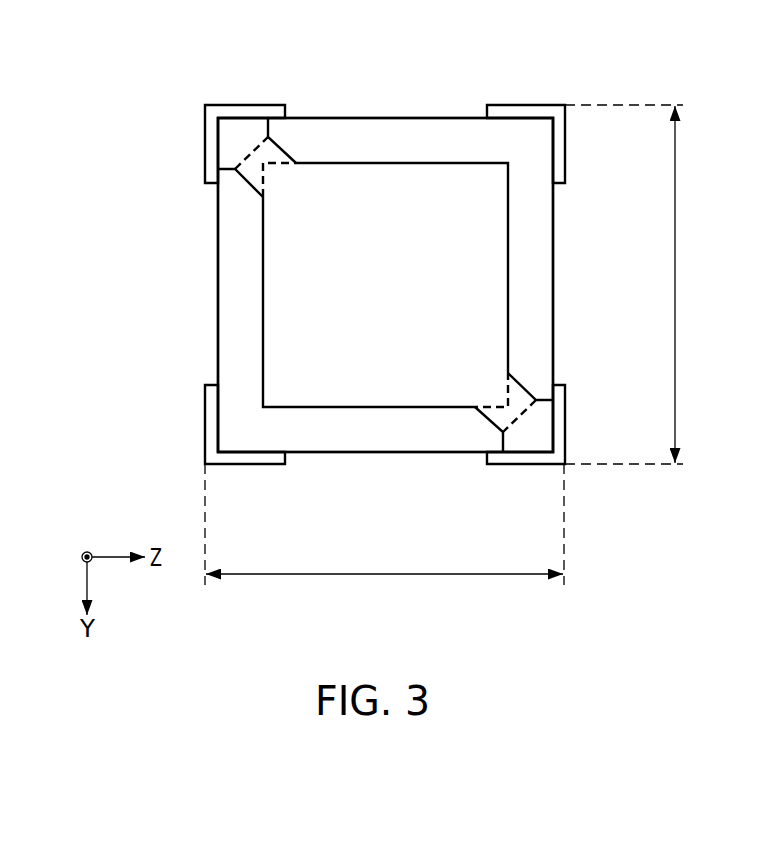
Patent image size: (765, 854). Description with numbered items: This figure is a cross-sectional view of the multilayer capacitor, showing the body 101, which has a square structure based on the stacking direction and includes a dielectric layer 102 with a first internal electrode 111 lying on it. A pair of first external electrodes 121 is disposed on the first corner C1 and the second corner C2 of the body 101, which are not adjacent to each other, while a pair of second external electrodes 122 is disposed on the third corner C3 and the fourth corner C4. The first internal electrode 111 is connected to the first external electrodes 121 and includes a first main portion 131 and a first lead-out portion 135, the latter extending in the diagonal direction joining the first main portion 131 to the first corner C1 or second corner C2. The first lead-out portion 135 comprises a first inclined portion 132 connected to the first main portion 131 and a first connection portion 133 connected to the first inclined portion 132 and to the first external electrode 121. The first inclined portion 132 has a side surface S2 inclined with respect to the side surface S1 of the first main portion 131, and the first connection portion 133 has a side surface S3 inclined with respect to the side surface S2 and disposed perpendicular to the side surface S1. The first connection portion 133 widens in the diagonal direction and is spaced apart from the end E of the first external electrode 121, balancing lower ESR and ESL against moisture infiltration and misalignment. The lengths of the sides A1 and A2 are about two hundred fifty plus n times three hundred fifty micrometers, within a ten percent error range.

The body 101 is at (398, 118).
The dielectric layer 102 is at (455, 132).
The first internal electrode 111 is at (292, 283).
The first external electrode 121 is at (243, 105).
The second external electrode 122 is at (522, 105).
The first main portion 131 is at (297, 281).
The first inclined portion 132 is at (268, 154).
The first connection portion 133 is at (233, 150).
The first lead-out portion 135 is at (188, 155).
The first corner C1 is at (215, 109).
The second corner C2 is at (553, 452).
The third corner C3 is at (217, 452).
The fourth corner C4 is at (553, 118).
The side surface of the first main portion S1 is at (347, 162).
The side surface of the first inclined portion S2 is at (291, 153).
The side surface of the first connection portion S3 is at (274, 128).
The end of the first external electrode E is at (487, 453).
The side A1 is at (384, 535).
The side A2 is at (638, 284).